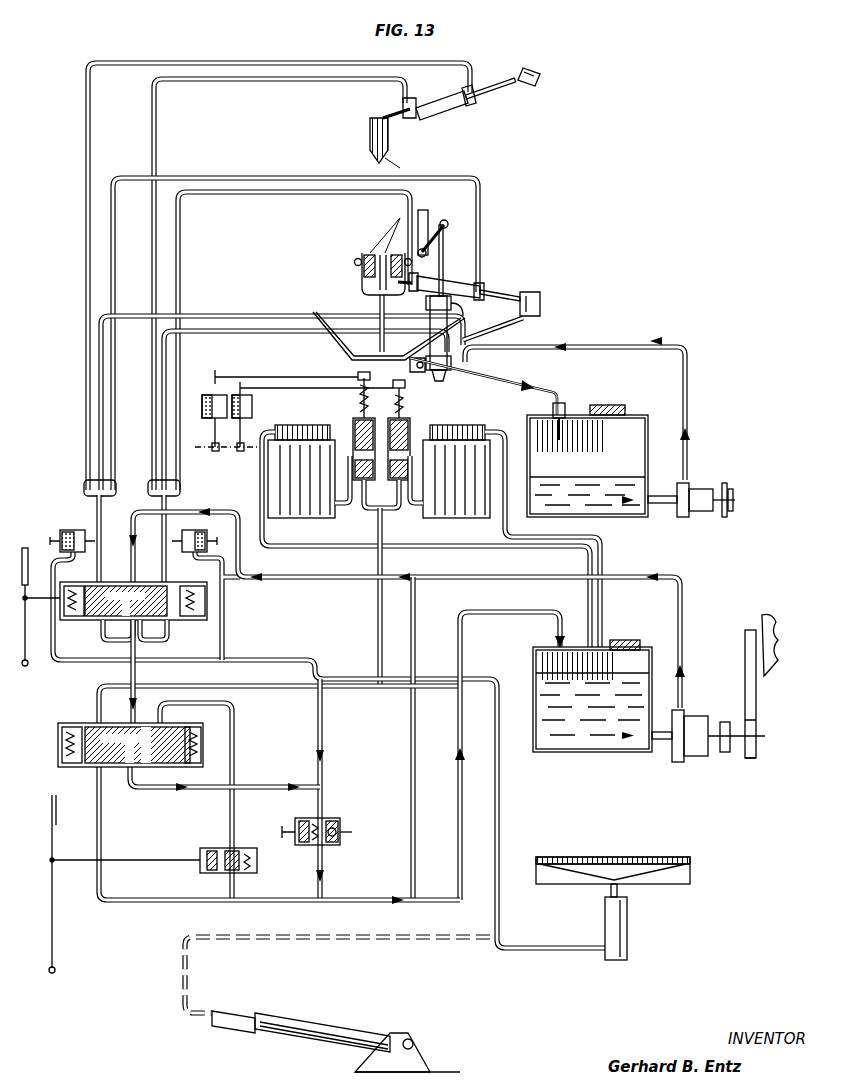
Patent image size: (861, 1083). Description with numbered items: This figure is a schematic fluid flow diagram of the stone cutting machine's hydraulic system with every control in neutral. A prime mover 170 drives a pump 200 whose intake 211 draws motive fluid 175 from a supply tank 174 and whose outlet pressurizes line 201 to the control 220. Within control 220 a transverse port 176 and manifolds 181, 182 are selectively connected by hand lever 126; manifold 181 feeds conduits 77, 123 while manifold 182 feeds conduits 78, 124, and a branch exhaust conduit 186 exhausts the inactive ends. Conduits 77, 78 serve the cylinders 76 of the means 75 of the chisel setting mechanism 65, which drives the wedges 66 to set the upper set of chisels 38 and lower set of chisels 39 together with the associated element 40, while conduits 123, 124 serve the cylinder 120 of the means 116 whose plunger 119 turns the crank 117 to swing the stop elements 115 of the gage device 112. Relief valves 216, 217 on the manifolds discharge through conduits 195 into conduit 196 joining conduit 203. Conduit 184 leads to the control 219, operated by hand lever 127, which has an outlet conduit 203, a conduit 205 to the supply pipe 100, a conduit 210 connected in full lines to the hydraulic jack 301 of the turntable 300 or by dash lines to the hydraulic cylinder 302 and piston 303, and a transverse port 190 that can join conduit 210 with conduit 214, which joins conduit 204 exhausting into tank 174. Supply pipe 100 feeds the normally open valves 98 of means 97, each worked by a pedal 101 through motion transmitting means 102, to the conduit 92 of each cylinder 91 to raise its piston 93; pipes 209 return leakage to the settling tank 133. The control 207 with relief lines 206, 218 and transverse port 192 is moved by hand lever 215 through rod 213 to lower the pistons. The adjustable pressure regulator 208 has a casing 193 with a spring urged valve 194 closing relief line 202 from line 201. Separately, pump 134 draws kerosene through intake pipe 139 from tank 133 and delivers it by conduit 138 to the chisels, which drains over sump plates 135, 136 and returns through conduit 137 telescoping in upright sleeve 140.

The upper set of chisels 38 is at (368, 122).
The lower set of chisels 39 is at (370, 252).
The valve spool 40 is at (384, 202).
The chisel setting mechanism 65 is at (536, 66).
The wedge 66 is at (396, 108).
The means for reciprocating the rack 75 is at (470, 104).
The cylinder 76 is at (448, 115).
The conduit 77 is at (86, 268).
The conduit 78 is at (160, 252).
The cylinder 91 is at (290, 518).
The entrance and exit conduit 92 is at (350, 510).
The piston 93 is at (310, 424).
The means for selectively actuating the jacks 97 is at (204, 394).
The valve 98 is at (352, 430).
The supply pipe 100 is at (386, 515).
The pedal 101 is at (280, 367).
The motion transmitting means 102 is at (280, 380).
The gage device 112 is at (452, 238).
The stop element 115 is at (427, 217).
The means for oscillating the shaft 116 is at (455, 352).
The crank 117 is at (443, 226).
The plunger 119 is at (445, 240).
The cylinder 120 is at (475, 314).
The conduit 123 is at (100, 392).
The conduit 124 is at (220, 333).
The hand lever 126 is at (28, 532).
The hand lever 127 is at (16, 681).
The settling tank 133 is at (632, 410).
The pump 134 is at (696, 515).
The sump plate 135 is at (528, 322).
The sump plate 136 is at (346, 355).
The conduit 137 is at (538, 386).
The conduit 138 is at (688, 398).
The intake pipe 139 is at (655, 492).
The upright sleeve 140 is at (566, 400).
The prime mover 170 is at (766, 616).
The supply tank 174 is at (572, 754).
The motive fluid 175 is at (548, 720).
The transverse port 176 is at (86, 586).
The manifold 181 is at (86, 494).
The manifold 182 is at (152, 496).
The conduit 184 is at (100, 680).
The branch exhaust conduit 186 is at (170, 630).
The transverse port 190 is at (84, 722).
The transverse port 192 is at (204, 868).
The casing 193 is at (300, 818).
The spring urged valve 194 is at (338, 840).
The conduit 195 is at (224, 594).
The conduit 196 is at (324, 726).
The pump 200 is at (698, 760).
The line 201 is at (684, 625).
The relief line 202 is at (410, 745).
The outlet conduit 203 is at (134, 790).
The conduit 204 is at (456, 857).
The conduit 205 is at (377, 625).
The relief line 206 is at (236, 748).
The control 207 is at (204, 848).
The adjustable pressure regulator 208 is at (326, 806).
The pipe 209 is at (302, 549).
The conduit 210 is at (333, 676).
The intake 211 is at (660, 742).
The rod 213 is at (130, 854).
The conduit 214 is at (160, 902).
The hand lever 215 is at (50, 862).
The relief valve 216 is at (62, 528).
The relief valve 217 is at (190, 553).
The relief line 218 is at (236, 887).
The control 219 is at (214, 715).
The control 220 is at (212, 618).
The turntable 300 is at (626, 857).
The hydraulic jack 301 is at (628, 915).
The hydraulic cylinder 302 is at (312, 1020).
The piston 303 is at (232, 1040).